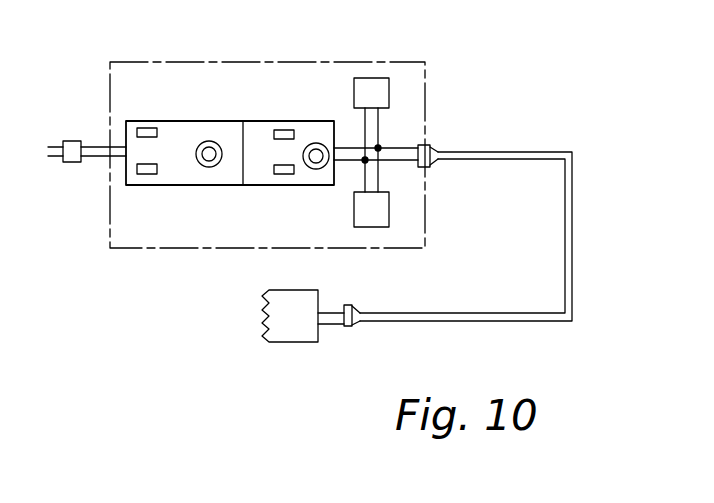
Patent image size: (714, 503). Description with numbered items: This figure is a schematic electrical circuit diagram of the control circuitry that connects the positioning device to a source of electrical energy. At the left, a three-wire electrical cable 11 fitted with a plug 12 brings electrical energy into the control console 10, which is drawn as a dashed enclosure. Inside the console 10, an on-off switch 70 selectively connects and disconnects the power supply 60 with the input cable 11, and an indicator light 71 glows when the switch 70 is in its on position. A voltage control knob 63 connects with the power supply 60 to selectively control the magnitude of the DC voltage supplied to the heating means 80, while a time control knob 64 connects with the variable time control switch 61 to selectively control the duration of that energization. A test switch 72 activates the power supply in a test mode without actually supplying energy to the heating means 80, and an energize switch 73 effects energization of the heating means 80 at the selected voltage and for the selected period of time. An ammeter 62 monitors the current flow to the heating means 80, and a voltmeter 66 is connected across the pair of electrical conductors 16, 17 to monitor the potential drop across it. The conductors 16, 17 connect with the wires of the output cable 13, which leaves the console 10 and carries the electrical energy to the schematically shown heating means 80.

The control console 10 is at (207, 62).
The three-wire electrical cable 11 is at (95, 141).
The plug 12 is at (75, 146).
The cable 13 is at (528, 152).
The electrical conductor 16 is at (405, 146).
The electrical conductor 17 is at (398, 163).
The power supply 60 is at (160, 185).
The variable time control switch 61 is at (317, 121).
The ammeter 62 is at (392, 92).
The voltage control knob 63 is at (196, 160).
The time control knob 64 is at (304, 165).
The voltmeter 66 is at (392, 205).
The on-off switch 70 is at (128, 173).
The indicator light 71 is at (147, 130).
The test switch 72 is at (292, 130).
The energize switch 73 is at (275, 177).
The heating means 80 is at (263, 320).